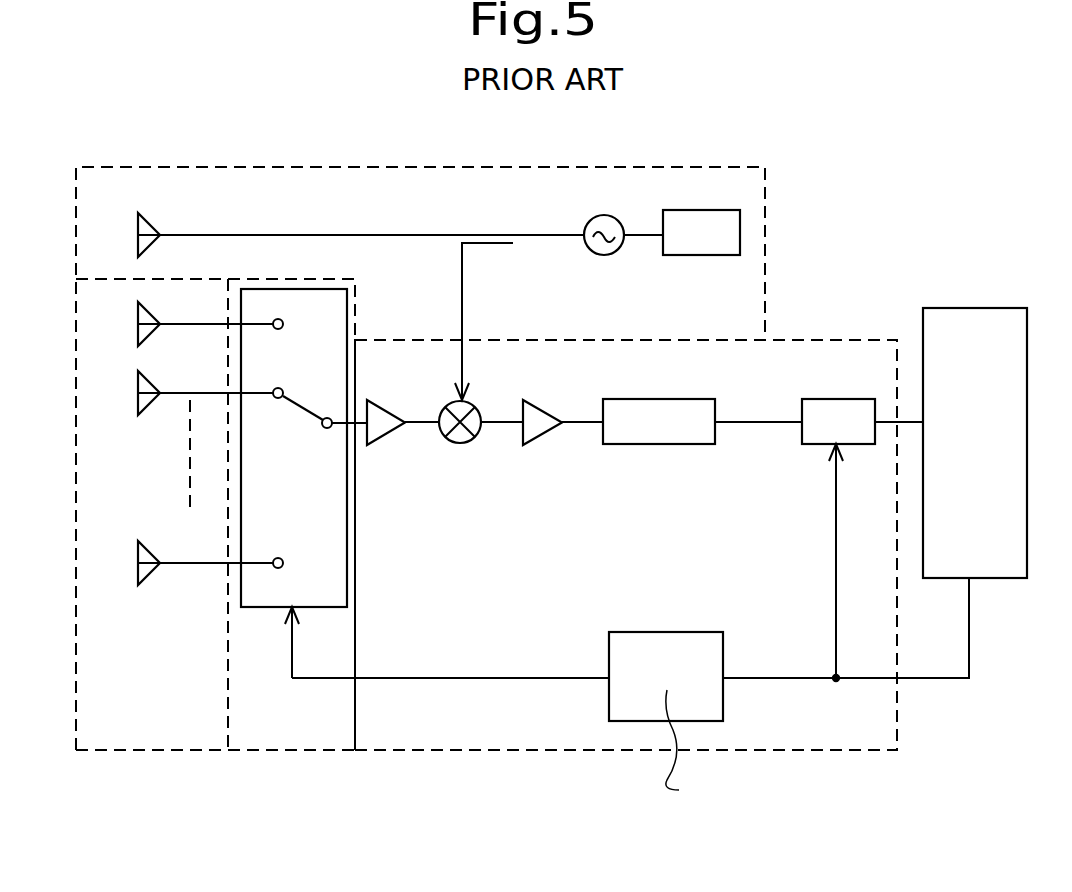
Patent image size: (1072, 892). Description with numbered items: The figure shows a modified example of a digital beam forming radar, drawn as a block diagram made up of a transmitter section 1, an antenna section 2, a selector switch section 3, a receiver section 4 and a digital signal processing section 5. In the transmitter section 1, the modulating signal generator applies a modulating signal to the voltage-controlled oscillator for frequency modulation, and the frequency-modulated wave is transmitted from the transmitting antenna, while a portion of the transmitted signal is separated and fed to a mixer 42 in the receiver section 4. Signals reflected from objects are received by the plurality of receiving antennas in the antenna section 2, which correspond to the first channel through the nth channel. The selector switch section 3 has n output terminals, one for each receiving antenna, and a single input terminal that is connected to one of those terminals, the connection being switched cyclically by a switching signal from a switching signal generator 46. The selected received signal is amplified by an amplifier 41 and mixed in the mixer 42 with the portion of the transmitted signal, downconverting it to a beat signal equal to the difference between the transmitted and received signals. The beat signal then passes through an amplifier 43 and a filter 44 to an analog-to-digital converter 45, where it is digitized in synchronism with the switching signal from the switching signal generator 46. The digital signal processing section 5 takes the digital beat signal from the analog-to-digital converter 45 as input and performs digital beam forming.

The transmitter section 1 is at (767, 195).
The antenna section 2 is at (148, 752).
The selector switch section 3 is at (289, 752).
The receiver section 4 is at (556, 752).
The digital signal processing section 5 is at (973, 308).
The amplifier 41 is at (385, 448).
The mixer 42 is at (458, 445).
The amplifier 43 is at (541, 448).
The filter 44 is at (662, 446).
The A/D converter 45 is at (840, 399).
The switching signal generator 46 is at (667, 632).